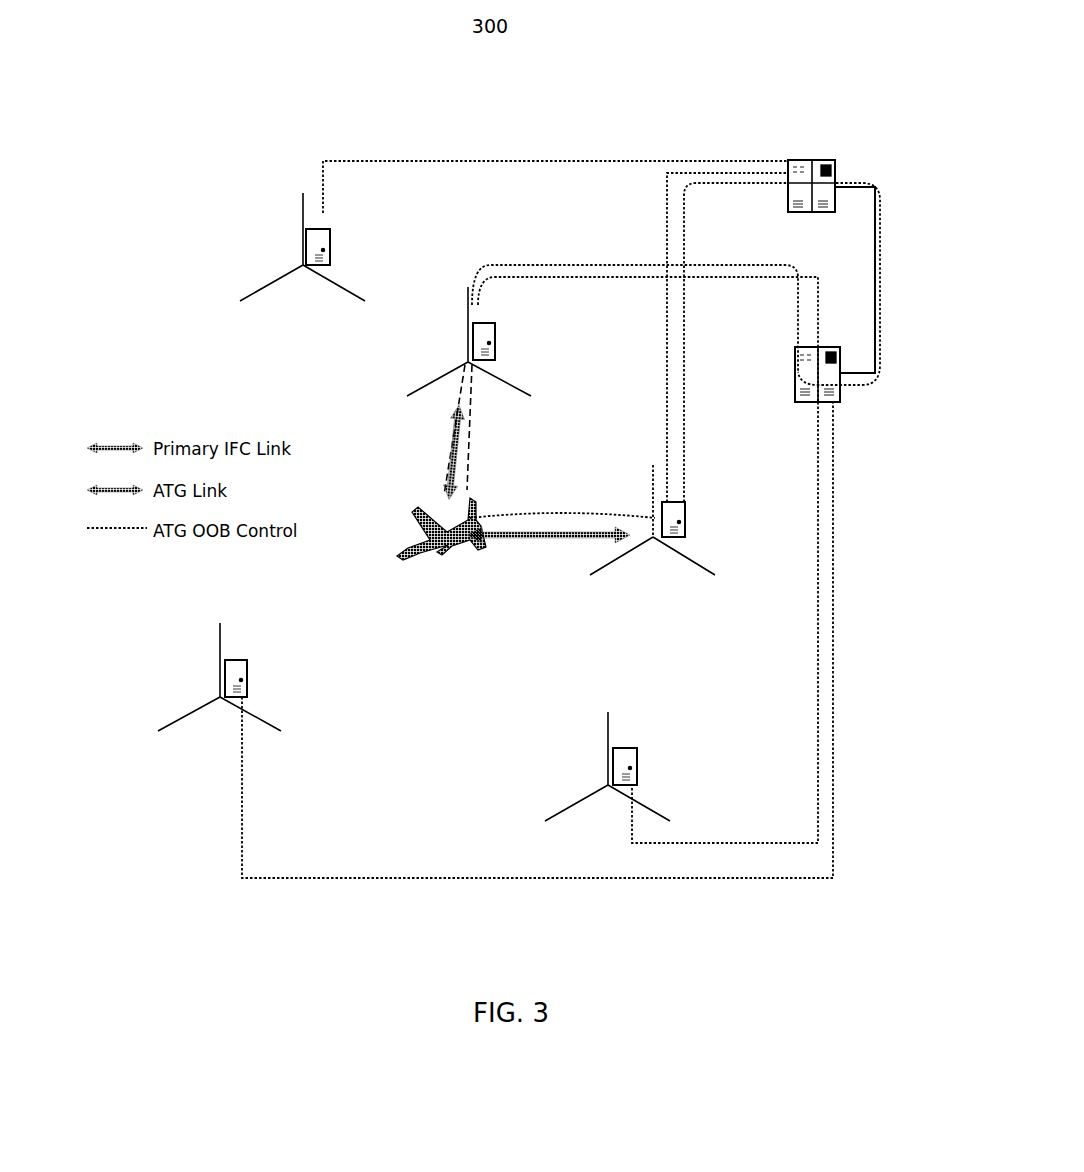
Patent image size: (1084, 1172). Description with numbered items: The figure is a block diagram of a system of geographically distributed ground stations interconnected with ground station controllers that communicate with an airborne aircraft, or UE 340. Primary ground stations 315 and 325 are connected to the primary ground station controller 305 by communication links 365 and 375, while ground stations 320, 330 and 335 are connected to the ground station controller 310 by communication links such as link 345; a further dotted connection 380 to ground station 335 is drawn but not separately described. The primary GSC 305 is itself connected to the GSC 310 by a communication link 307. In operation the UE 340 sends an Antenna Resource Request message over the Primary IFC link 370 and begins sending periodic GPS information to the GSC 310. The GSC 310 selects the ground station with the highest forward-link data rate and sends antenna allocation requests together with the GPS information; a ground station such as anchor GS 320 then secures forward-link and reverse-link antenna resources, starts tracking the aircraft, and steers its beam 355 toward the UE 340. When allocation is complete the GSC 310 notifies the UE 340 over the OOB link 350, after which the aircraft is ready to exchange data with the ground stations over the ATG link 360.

The primary ground station controller 305 is at (808, 155).
The communication link 307 is at (880, 278).
The ground station controller 310 is at (790, 377).
The primary ground station 315 is at (300, 230).
The ground station 320 is at (465, 339).
The primary ground station 325 is at (697, 553).
The ground station 330 is at (600, 758).
The ground station 335 is at (215, 677).
The UE 340 is at (528, 167).
The communication link 345 is at (662, 398).
The OOB link 350 is at (642, 260).
The beam 355 is at (470, 457).
The ATG link 360 is at (447, 443).
The communication link 365 is at (587, 280).
The Primary IFC link 370 is at (547, 540).
The communication link 375 is at (815, 703).
The ATG OOB control link 380 is at (318, 867).